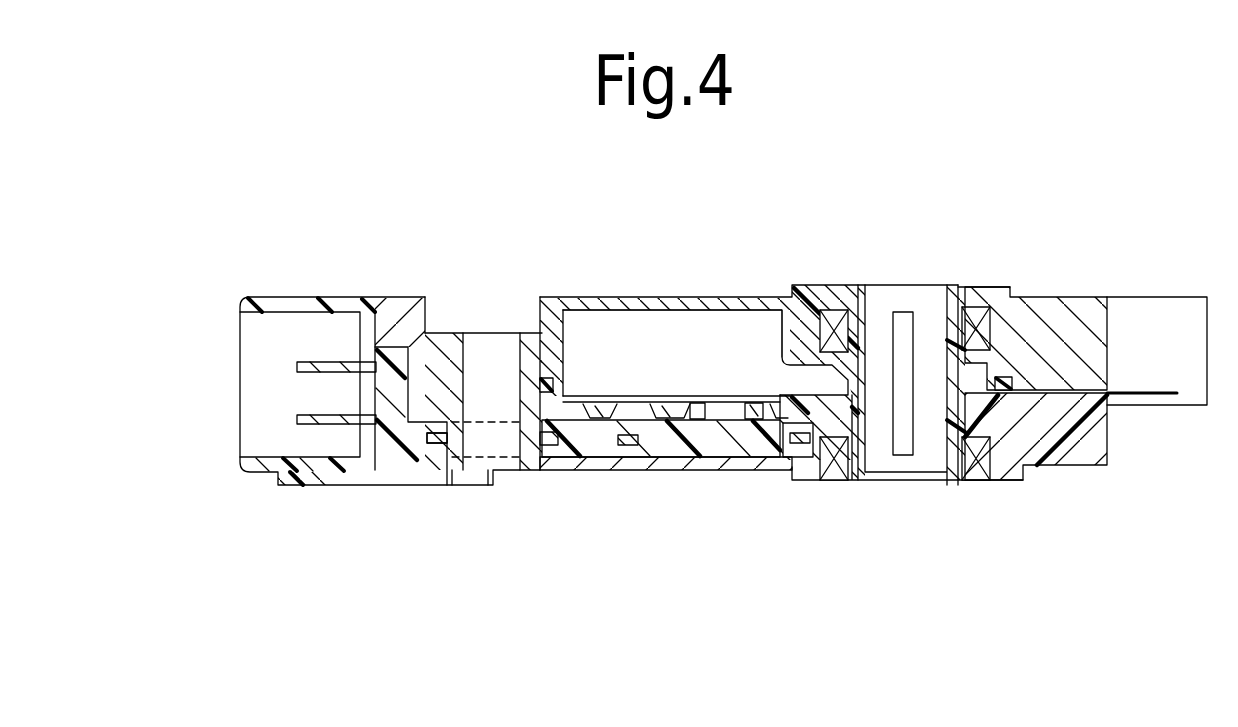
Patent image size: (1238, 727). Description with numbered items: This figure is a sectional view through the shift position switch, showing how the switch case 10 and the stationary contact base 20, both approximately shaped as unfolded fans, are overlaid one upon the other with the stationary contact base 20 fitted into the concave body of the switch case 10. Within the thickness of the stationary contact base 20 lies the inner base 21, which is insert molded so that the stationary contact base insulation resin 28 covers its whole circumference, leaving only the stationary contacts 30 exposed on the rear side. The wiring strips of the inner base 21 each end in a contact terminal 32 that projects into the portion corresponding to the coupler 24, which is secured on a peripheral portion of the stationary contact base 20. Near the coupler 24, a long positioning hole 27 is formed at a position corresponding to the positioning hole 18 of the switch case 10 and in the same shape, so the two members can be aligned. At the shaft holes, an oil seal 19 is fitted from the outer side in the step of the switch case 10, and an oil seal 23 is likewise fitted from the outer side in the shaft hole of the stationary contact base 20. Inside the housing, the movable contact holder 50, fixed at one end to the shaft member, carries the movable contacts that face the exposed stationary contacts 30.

The switch case 10 is at (731, 297).
The positioning hole 18 is at (490, 340).
The oil seal 19 is at (985, 300).
The stationary contact base 20 is at (1095, 467).
The inner base 21 is at (730, 452).
The oil seal 23 is at (982, 480).
The coupler 24 is at (277, 299).
The positioning hole 27 is at (508, 450).
The stationary contact base insulation resin 28 is at (642, 470).
The stationary contacts 30 is at (580, 396).
The contact terminal 32 is at (300, 366).
The movable contact holder 50 is at (640, 337).